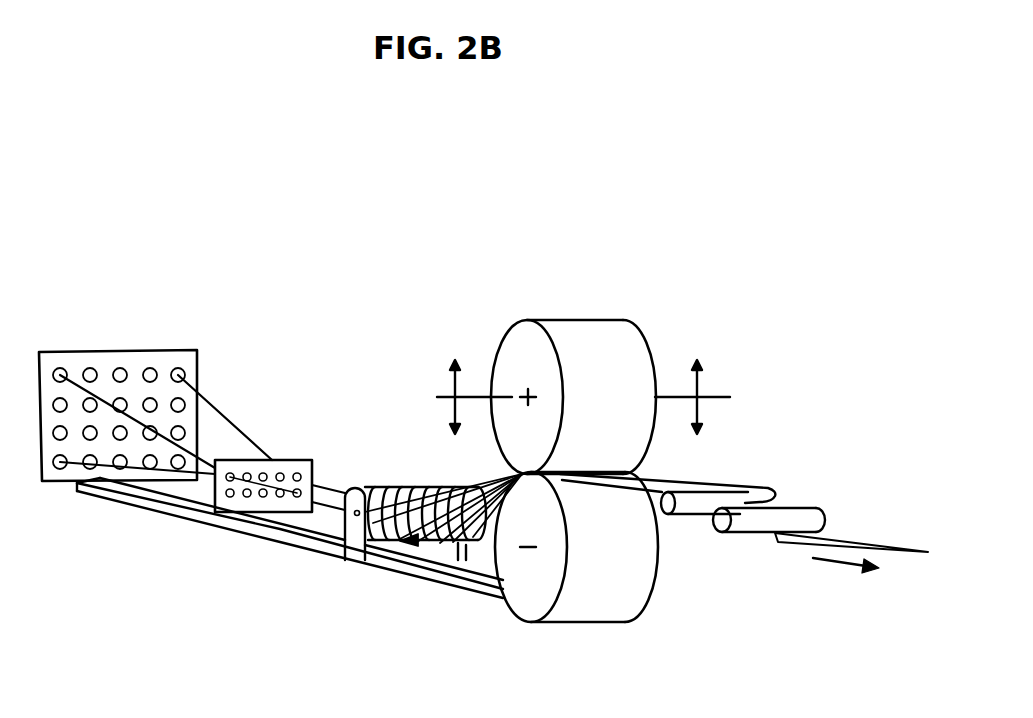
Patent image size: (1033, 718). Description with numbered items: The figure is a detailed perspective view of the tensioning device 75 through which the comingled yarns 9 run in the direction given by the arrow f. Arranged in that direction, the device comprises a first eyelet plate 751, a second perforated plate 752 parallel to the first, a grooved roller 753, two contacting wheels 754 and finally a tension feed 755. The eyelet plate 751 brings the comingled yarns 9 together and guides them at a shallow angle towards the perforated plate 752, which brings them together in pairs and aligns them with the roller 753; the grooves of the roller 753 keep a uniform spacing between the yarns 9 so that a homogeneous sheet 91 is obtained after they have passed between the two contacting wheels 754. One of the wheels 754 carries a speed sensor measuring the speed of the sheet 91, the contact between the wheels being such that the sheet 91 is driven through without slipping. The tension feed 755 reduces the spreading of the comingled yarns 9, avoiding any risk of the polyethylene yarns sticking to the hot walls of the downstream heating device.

The comingled yarns 9 is at (239, 424).
The tensioning device 75 is at (298, 548).
The sheet 91 is at (878, 540).
The eyelet plate 751 is at (150, 359).
The perforated plate 752 is at (228, 514).
The grooved roller 753 is at (408, 548).
The contacting wheels 754 is at (604, 338).
The tension feed 755 is at (800, 503).